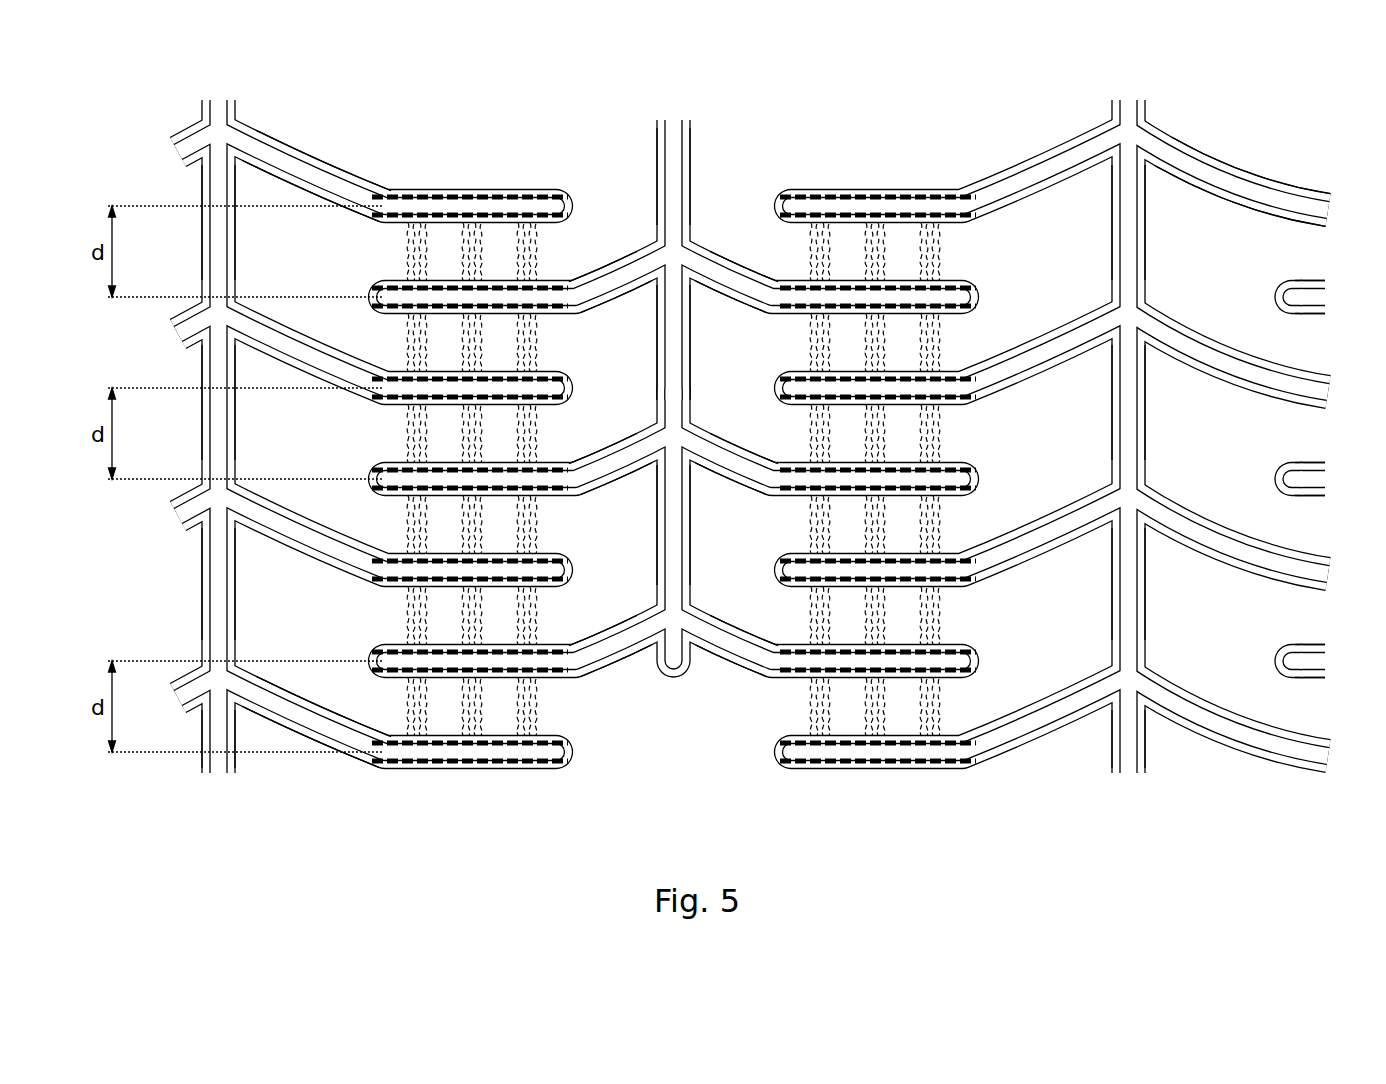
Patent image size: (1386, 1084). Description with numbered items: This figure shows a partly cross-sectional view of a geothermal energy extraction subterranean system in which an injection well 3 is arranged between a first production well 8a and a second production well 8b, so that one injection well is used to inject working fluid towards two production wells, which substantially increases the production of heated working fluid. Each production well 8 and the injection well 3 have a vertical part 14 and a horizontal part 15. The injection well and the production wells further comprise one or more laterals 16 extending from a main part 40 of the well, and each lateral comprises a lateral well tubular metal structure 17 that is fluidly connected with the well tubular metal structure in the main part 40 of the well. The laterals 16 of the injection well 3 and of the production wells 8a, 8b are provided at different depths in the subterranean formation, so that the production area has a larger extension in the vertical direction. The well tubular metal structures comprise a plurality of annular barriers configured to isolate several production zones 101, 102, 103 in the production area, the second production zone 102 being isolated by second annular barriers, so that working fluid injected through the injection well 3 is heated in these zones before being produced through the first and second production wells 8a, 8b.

The injection well 3 is at (680, 150).
The production well 8 is at (206, 118).
The first production well 8a is at (231, 112).
The second production well 8b is at (1148, 112).
The vertical part 14 is at (680, 307).
The horizontal part 15 is at (548, 775).
The lateral 16 is at (735, 668).
The lateral well tubular metal structure 17 is at (636, 270).
The main part 40 is at (680, 358).
The production zone 101 is at (413, 248).
The second production zone 102 is at (468, 248).
The production zone 103 is at (523, 248).